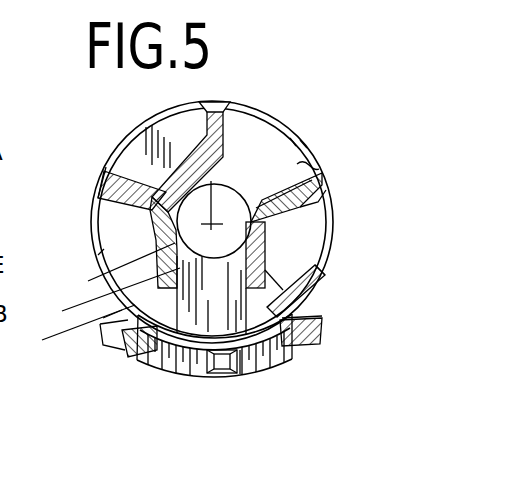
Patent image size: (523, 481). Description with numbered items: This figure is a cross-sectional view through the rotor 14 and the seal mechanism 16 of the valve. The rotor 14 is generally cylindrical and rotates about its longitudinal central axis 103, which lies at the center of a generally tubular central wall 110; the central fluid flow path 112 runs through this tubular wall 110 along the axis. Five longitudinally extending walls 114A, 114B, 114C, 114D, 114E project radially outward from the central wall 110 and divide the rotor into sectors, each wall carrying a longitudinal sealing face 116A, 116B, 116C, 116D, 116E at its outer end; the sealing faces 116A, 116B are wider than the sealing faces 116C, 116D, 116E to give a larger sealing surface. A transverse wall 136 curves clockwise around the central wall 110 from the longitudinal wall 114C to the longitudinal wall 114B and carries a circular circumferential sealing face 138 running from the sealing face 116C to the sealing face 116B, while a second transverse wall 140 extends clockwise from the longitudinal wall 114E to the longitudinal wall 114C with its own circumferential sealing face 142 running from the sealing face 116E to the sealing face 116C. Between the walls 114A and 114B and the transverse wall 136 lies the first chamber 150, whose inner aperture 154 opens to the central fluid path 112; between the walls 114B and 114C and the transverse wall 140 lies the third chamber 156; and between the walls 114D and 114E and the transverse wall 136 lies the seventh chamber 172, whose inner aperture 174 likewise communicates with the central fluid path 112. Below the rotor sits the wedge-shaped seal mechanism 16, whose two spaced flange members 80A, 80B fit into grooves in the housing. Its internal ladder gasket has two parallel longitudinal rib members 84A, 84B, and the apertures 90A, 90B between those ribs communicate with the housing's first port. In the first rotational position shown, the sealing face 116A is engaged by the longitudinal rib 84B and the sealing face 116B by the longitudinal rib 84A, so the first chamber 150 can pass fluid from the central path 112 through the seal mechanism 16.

The rotor 14 is at (105, 126).
The seal mechanism 16 is at (149, 383).
The flange member 80A is at (100, 321).
The flange member 80B is at (330, 348).
The longitudinal rib member 84A is at (147, 355).
The longitudinal rib member 84B is at (300, 317).
The aperture 90A is at (185, 358).
The aperture 90B is at (250, 355).
The longitudinal central axis 103 is at (223, 224).
The tubular central wall 110 is at (153, 214).
The central fluid flow path 112 is at (232, 190).
The longitudinal wall 114A is at (310, 268).
The longitudinal wall 114B is at (67, 331).
The longitudinal wall 114C is at (101, 195).
The longitudinal wall 114D is at (225, 130).
The longitudinal wall 114E is at (326, 218).
The longitudinal sealing face 116A is at (307, 300).
The longitudinal sealing face 116B is at (103, 318).
The longitudinal sealing face 116C is at (103, 178).
The longitudinal sealing face 116D is at (212, 100).
The longitudinal sealing face 116E is at (330, 192).
The transverse wall 136 is at (319, 169).
The circular circumferential sealing face 138 is at (307, 143).
The transverse wall 140 is at (111, 270).
The circular circumferential sealing face 142 is at (98, 255).
The first chamber 150 is at (240, 352).
The inner aperture 154 is at (248, 250).
The third chamber 156 is at (102, 296).
The seventh chamber 172 is at (290, 138).
The inner aperture 174 is at (204, 205).